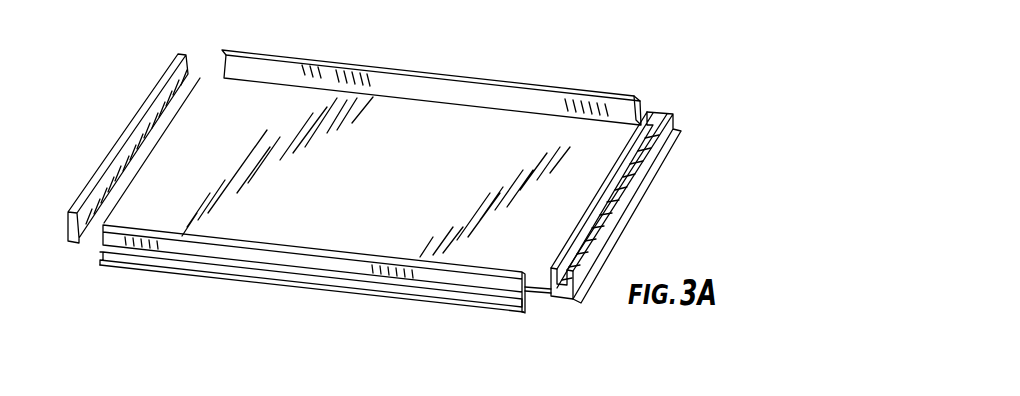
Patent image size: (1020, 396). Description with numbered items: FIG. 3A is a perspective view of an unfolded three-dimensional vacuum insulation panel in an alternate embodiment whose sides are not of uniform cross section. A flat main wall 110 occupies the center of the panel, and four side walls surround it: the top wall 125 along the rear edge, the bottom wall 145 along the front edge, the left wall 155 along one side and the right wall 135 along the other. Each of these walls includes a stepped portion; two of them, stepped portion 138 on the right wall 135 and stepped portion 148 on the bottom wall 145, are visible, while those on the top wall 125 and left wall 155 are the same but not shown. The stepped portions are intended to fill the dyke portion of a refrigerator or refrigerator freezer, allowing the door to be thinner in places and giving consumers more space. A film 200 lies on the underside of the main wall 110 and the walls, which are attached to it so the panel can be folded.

The main wall 110 is at (467, 137).
The top wall 125 is at (610, 95).
The right wall 135 is at (613, 197).
The stepped portion 138 is at (647, 168).
The bottom wall 145 is at (368, 268).
The stepped portion 148 is at (481, 290).
The left wall 155 is at (117, 157).
The film 200 is at (128, 265).